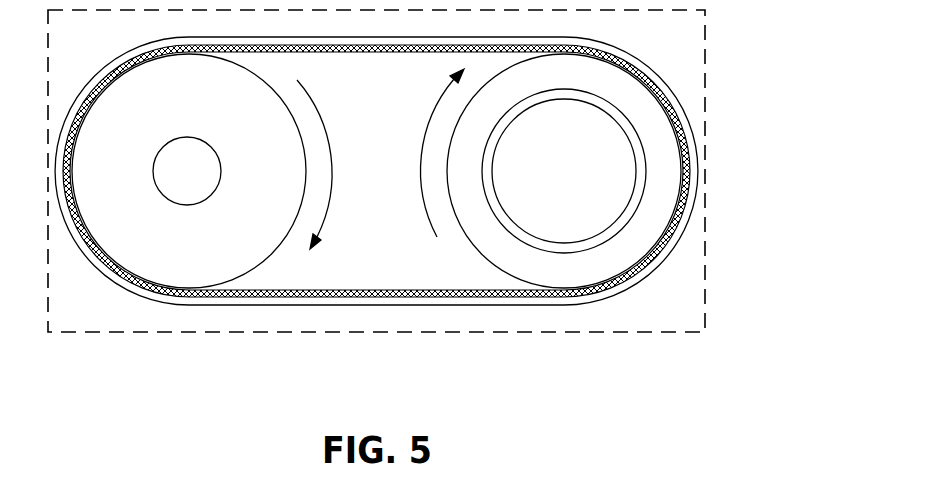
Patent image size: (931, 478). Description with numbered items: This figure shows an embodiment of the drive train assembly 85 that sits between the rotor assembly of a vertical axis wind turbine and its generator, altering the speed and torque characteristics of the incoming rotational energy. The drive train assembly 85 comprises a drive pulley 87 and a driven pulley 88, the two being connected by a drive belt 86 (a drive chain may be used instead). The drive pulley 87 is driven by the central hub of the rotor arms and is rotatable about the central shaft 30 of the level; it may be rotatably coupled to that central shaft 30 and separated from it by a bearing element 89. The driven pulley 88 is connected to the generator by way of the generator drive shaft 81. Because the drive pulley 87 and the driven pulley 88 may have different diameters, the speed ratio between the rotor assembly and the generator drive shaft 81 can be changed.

The drive train assembly 85 is at (179, 343).
The drive belt 86 is at (318, 299).
The driven pulley 88 is at (260, 78).
The generator drive shaft 81 is at (197, 187).
The drive pulley 87 is at (665, 162).
The bearing element 89 is at (627, 217).
The central shaft 30 is at (603, 183).